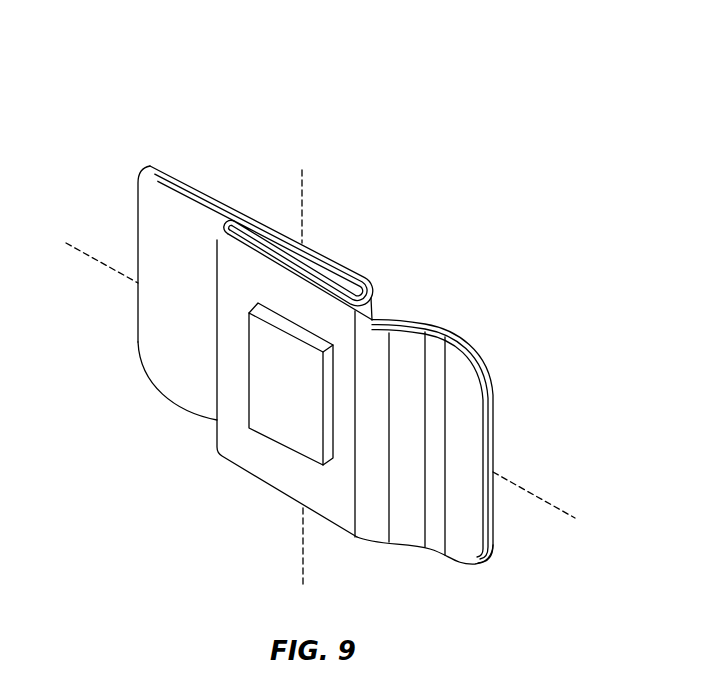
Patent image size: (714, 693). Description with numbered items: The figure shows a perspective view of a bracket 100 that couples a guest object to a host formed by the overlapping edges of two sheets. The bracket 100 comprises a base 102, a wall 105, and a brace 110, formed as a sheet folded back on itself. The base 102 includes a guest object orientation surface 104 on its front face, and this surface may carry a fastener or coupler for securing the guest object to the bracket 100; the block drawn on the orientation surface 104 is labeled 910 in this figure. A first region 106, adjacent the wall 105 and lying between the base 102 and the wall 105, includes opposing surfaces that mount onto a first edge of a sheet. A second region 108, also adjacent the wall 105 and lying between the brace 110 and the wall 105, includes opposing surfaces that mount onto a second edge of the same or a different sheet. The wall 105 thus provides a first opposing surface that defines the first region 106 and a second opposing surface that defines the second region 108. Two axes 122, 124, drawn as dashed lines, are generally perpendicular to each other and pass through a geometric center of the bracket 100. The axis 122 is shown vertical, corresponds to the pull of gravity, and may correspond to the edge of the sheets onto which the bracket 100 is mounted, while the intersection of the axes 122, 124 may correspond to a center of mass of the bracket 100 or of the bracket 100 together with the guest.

The bracket 100 is at (117, 119).
The base 102 is at (478, 348).
The guest object orientation surface 104 is at (280, 483).
The wall 105 is at (300, 267).
The first region 106 is at (392, 311).
The second region 108 is at (220, 218).
The brace 110 is at (217, 190).
The axis 122 is at (306, 186).
The axis 124 is at (577, 506).
The rectangular block 910 is at (248, 411).